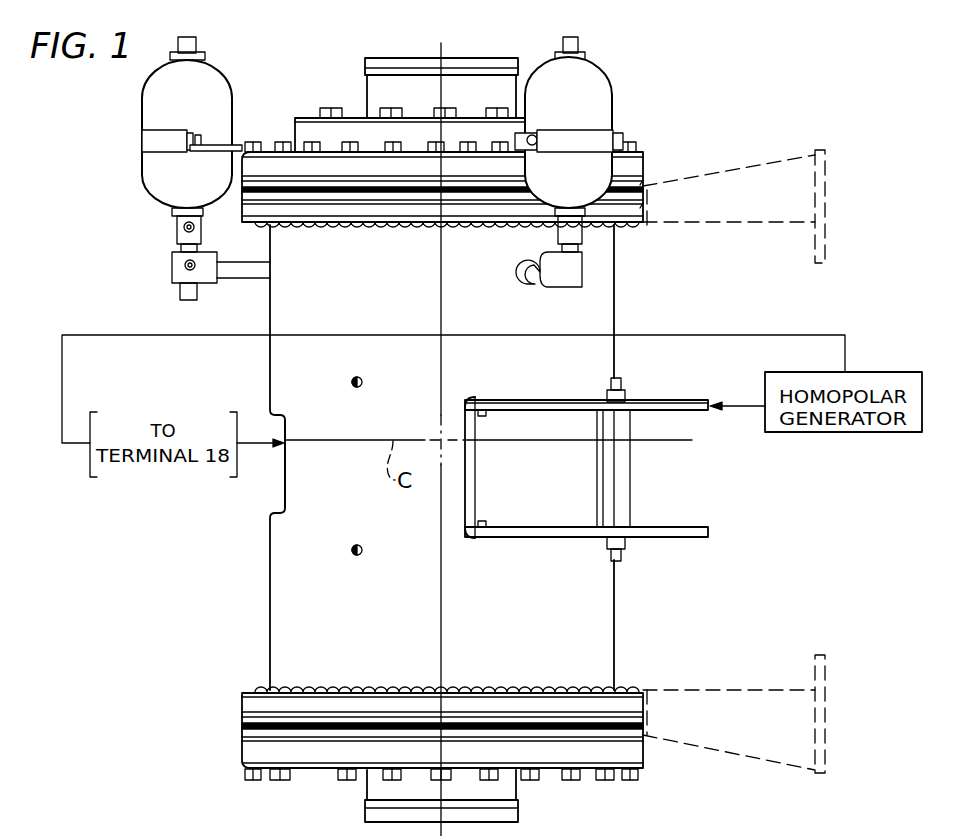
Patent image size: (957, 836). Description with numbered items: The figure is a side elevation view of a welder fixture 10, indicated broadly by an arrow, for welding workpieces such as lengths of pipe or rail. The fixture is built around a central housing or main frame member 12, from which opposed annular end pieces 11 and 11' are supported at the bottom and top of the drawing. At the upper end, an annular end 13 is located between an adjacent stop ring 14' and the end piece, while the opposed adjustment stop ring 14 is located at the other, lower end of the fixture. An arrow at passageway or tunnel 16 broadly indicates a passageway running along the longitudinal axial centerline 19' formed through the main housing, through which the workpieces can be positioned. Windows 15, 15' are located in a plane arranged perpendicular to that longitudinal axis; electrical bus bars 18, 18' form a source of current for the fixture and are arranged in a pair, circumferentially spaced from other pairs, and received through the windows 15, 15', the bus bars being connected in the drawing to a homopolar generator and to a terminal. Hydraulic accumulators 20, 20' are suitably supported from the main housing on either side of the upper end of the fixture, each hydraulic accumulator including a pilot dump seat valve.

The welder fixture 10 is at (732, 290).
The annular end piece 11 is at (480, 740).
The annular end piece 11' is at (484, 179).
The central housing or main frame member 12 is at (622, 310).
The annular end 13 is at (297, 128).
The adjustment stop ring 14 is at (410, 798).
The stop ring 14' is at (409, 88).
The window 15 is at (249, 470).
The window 15' is at (547, 469).
The passageway or tunnel 16 is at (494, 52).
The electrical bus bar 18 is at (598, 380).
The electrical bus bar 18' is at (602, 503).
The longitudinal axial centerline 19' is at (482, 367).
The hydraulic accumulator 20 is at (177, 168).
The hydraulic accumulator 20' is at (602, 162).